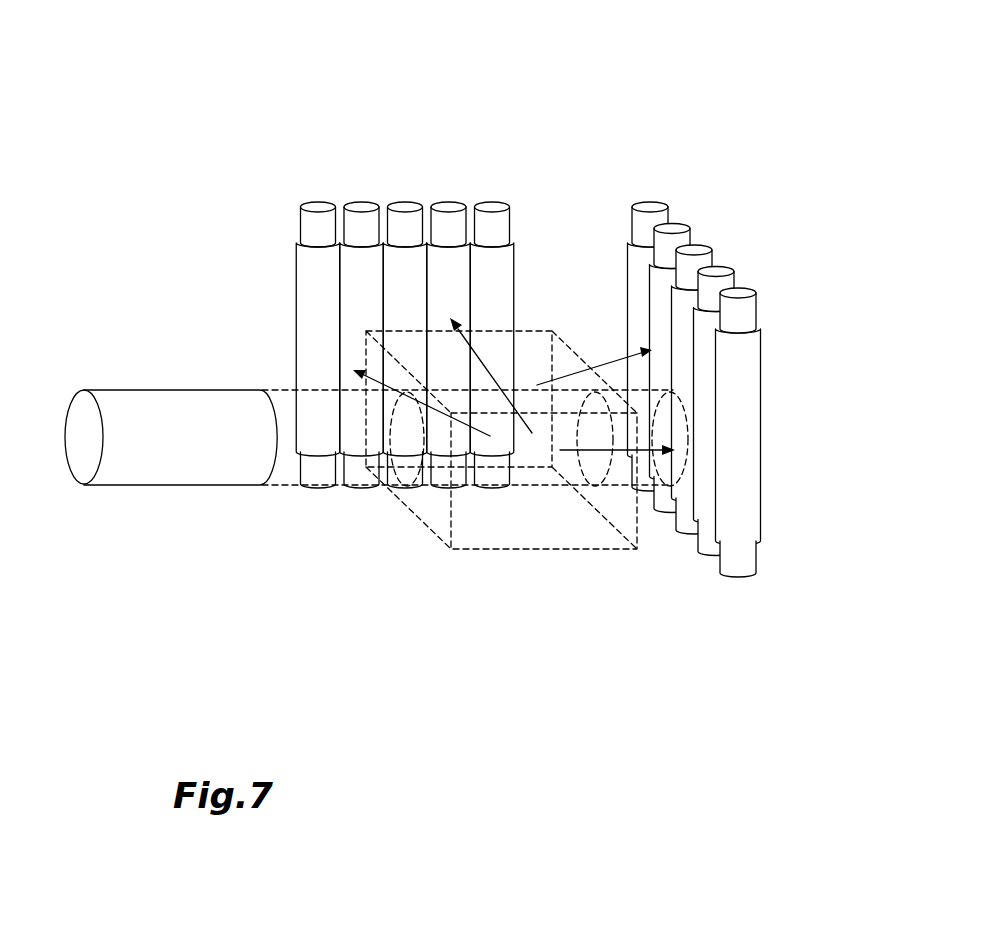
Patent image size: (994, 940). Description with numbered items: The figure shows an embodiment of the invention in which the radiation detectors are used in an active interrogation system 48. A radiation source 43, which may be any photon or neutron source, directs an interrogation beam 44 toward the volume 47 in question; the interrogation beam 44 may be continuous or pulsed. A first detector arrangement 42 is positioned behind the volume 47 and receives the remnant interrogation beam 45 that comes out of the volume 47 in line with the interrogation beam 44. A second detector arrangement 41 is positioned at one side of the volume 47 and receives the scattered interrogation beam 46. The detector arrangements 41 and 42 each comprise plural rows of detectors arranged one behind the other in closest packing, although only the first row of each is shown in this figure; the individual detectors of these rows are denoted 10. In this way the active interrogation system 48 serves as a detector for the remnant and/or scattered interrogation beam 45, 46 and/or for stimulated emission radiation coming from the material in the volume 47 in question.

The light emitting element / LED lamp 10 is at (363, 220).
The second detector arrangement 41 is at (437, 244).
The first detector arrangement 42 is at (767, 488).
The radiation source 43 is at (140, 462).
The interrogation beam 44 is at (289, 474).
The remnant interrogation beam 45 is at (645, 483).
The scattered interrogation beam 46 is at (485, 363).
The volume in question 47 is at (505, 550).
The active interrogation system 48 is at (590, 282).